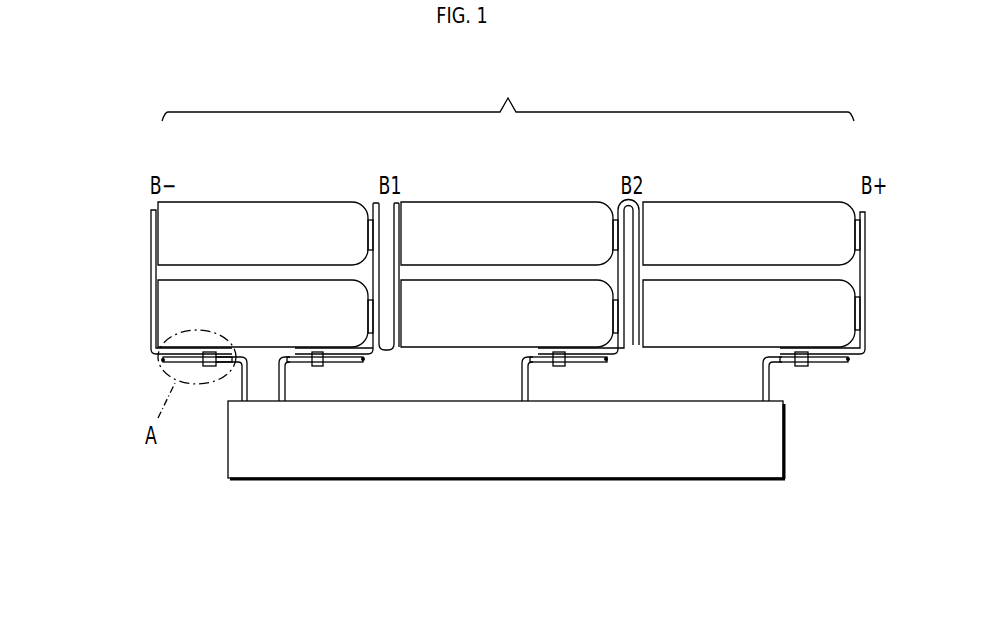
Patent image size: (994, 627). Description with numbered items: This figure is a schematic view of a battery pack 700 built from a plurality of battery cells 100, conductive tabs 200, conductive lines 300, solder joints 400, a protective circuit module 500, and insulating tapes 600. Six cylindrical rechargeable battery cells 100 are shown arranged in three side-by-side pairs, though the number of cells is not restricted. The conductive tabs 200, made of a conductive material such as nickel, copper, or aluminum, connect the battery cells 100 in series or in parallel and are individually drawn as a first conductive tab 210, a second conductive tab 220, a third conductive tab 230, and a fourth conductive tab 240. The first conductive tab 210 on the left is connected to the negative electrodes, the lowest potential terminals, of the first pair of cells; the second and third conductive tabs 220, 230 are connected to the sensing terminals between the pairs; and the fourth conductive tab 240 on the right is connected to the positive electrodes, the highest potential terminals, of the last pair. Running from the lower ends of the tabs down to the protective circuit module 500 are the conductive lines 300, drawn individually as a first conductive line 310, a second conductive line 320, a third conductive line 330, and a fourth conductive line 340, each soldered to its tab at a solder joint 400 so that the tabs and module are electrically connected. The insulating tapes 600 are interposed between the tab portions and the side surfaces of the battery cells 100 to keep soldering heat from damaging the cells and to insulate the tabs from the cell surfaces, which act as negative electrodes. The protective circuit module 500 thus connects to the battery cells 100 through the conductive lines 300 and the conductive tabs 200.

The battery pack 700 is at (42, 78).
The conductive tabs 200 is at (508, 95).
The first conductive tab 210 is at (151, 211).
The second conductive tab 220 is at (367, 205).
The third conductive tab 230 is at (615, 200).
The fourth conductive tab 240 is at (861, 211).
The battery cells 100 is at (144, 248).
The insulating tapes 600 is at (175, 346).
The solder joints 400 is at (157, 359).
The first conductive line 310 is at (241, 385).
The second conductive line 320 is at (286, 380).
The third conductive line 330 is at (522, 381).
The fourth conductive line 340 is at (763, 381).
The conductive lines 300 is at (781, 383).
The protective circuit module 500 is at (506, 479).